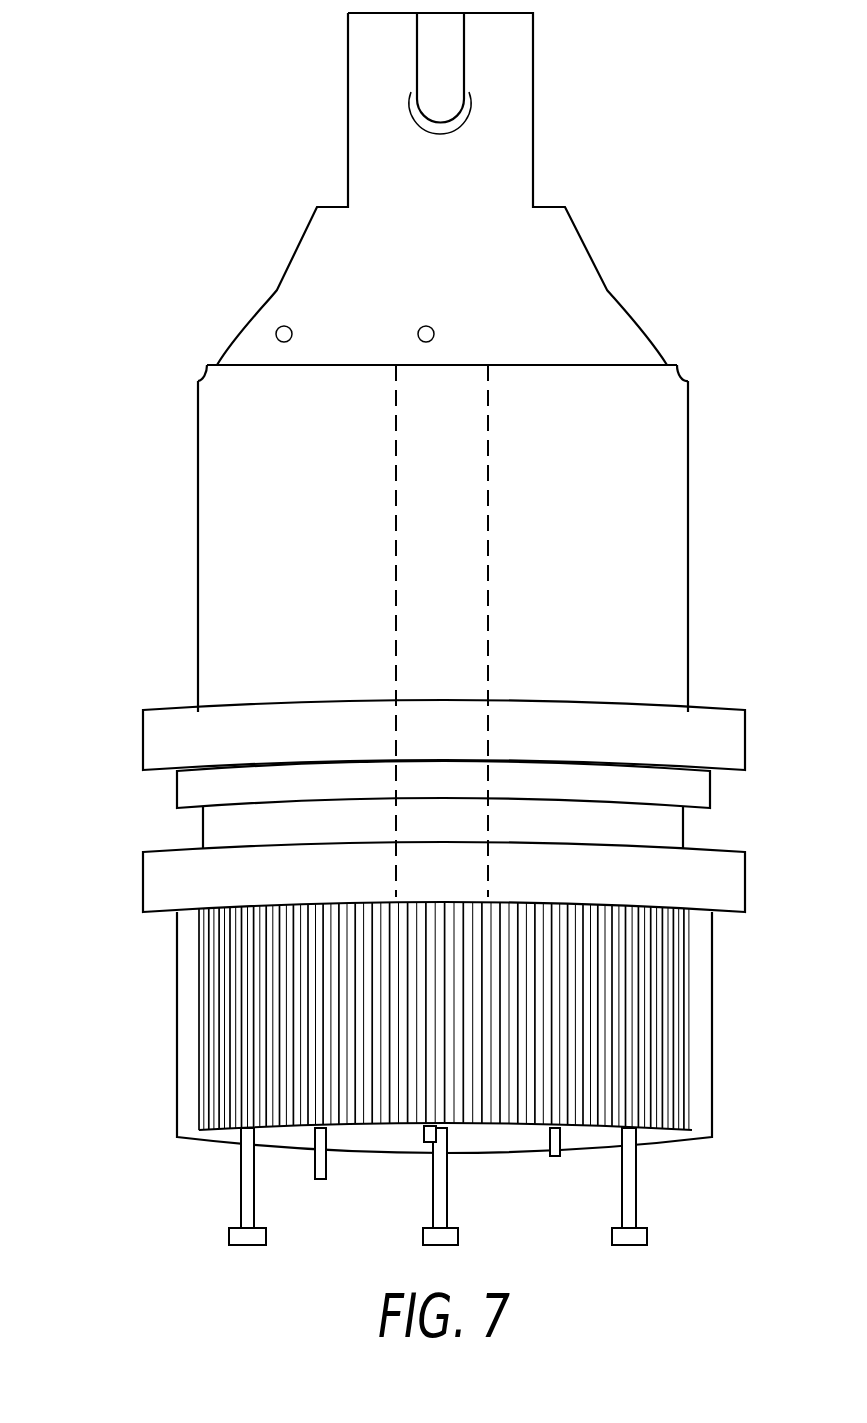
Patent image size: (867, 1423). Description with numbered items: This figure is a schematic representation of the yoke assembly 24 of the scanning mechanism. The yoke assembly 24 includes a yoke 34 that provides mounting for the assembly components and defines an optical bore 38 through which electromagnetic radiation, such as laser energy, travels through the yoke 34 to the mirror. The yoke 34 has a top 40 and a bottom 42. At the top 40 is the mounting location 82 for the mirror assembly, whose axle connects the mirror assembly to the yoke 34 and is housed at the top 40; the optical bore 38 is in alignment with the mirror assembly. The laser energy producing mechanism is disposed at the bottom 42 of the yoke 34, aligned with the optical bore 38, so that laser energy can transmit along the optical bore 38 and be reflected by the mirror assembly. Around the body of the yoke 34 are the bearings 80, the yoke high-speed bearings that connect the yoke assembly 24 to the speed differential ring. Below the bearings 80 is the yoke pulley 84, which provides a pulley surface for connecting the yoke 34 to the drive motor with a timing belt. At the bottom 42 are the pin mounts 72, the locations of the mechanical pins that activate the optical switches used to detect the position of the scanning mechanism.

The yoke assembly 24 is at (426, 629).
The top 40 is at (422, 189).
The mounting location for the mirror assembly 82 is at (468, 102).
The optical bore 38 is at (396, 478).
The yoke 34 is at (667, 484).
The bearings 80 is at (732, 753).
The yoke pulley 84 is at (712, 1051).
The pin mounts 72 is at (326, 1163).
The bottom 42 is at (417, 1072).